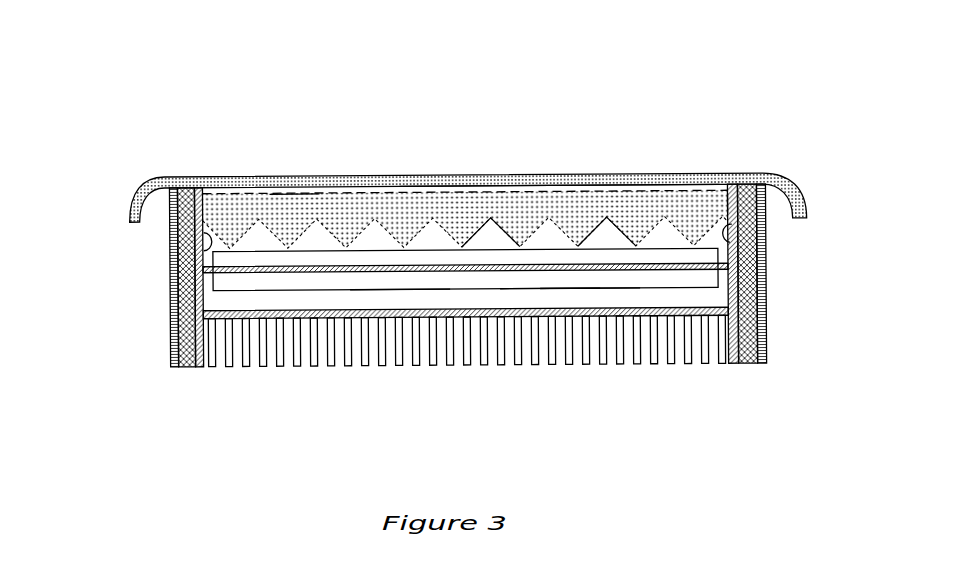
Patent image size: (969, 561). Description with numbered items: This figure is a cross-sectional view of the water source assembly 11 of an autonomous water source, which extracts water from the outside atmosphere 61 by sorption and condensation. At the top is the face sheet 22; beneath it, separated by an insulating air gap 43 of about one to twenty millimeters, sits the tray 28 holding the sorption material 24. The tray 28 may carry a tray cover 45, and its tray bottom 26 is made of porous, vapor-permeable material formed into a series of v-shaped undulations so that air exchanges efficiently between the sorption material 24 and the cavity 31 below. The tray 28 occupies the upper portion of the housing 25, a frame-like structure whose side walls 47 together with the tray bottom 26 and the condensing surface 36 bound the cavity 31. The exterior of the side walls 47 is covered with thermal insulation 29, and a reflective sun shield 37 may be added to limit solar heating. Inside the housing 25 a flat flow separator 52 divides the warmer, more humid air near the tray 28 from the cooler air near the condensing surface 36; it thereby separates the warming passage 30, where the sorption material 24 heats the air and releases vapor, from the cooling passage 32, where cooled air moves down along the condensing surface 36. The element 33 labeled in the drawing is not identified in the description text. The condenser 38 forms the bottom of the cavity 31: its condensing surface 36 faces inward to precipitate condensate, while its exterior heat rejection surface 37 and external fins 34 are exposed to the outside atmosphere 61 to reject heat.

The outside atmosphere 61 is at (85, 81).
The water source assembly 11 is at (768, 366).
The face sheet 22 is at (607, 174).
The sorption material 24 is at (410, 223).
The housing 25 is at (720, 198).
The tray bottom 26 is at (483, 238).
The tray 28 is at (418, 190).
The thermal insulation 29 is at (187, 305).
The warming passage 30 is at (320, 250).
The cavity 31 is at (568, 293).
The cooling passage 32 is at (395, 297).
The heat spreader 33 is at (548, 282).
The external fins 34 is at (248, 367).
The condensing surface 36 is at (707, 307).
The heat rejection surface 37 is at (170, 287).
The condenser 38 is at (645, 367).
The air gap 43 is at (558, 186).
The tray cover 45 is at (290, 193).
The side walls 47 is at (203, 231).
The flow separator 52 is at (275, 263).